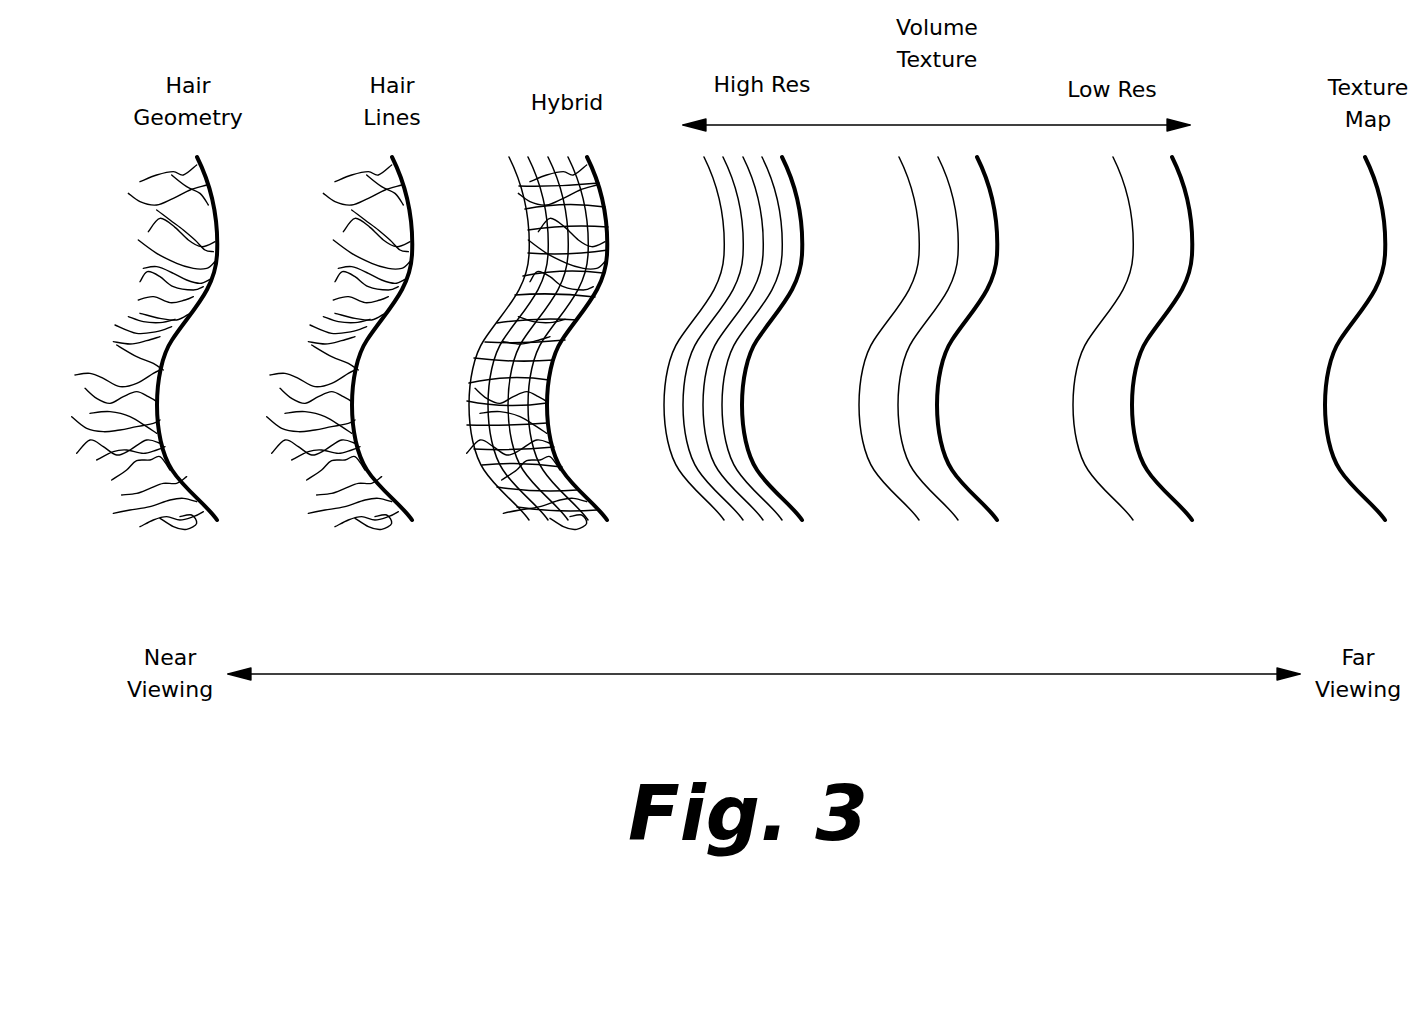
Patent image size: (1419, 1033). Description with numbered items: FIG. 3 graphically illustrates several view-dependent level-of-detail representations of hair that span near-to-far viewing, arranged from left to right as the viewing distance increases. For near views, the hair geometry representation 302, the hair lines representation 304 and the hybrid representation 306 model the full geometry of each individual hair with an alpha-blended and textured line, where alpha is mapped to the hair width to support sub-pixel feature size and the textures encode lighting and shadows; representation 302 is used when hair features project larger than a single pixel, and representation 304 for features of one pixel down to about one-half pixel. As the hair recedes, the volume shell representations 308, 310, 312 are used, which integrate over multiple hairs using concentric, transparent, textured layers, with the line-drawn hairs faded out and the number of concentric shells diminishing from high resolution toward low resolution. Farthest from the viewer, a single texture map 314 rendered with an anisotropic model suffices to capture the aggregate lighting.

The hair geometry representation 302 is at (145, 372).
The hair lines representation 304 is at (340, 372).
The hybrid representation 306 is at (537, 372).
The high resolution volume shell representation 308 is at (733, 372).
The volume shell representation 310 is at (928, 372).
The low resolution volume shell representation 312 is at (1132, 372).
The texture map 314 is at (1361, 372).